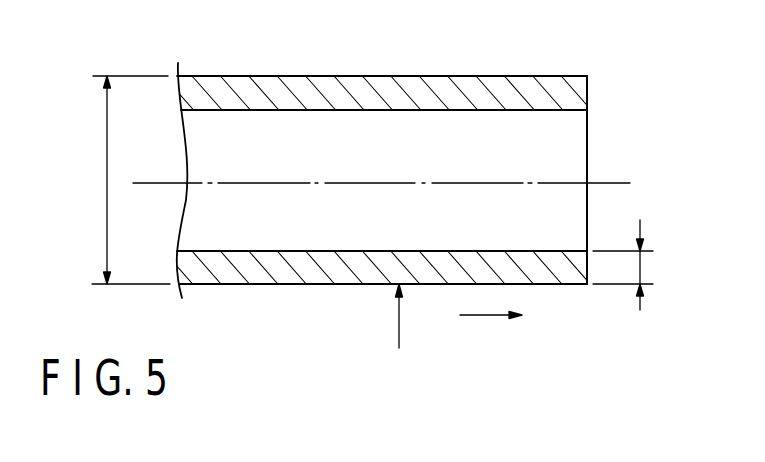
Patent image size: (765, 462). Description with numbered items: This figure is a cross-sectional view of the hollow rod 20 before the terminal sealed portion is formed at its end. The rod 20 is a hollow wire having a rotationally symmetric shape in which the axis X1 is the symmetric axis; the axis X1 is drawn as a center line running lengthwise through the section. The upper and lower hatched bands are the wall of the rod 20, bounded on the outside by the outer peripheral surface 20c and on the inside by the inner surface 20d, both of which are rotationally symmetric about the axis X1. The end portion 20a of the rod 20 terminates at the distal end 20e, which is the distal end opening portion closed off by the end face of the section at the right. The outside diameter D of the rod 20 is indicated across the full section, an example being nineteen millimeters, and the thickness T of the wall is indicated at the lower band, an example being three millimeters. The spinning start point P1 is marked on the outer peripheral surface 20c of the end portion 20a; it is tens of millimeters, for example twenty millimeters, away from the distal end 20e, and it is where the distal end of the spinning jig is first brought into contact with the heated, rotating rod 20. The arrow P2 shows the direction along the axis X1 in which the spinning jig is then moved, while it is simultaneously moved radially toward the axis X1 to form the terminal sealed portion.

The rod 20 is at (260, 76).
The end portion 20a is at (543, 268).
The outer peripheral surface 20c is at (485, 76).
The inner surface 20d is at (402, 111).
The distal end 20e is at (590, 100).
The axis X1 is at (607, 183).
The outside diameter D is at (106, 172).
The thickness T is at (643, 270).
The spinning start point P1 is at (399, 330).
The arrow P2 is at (483, 318).